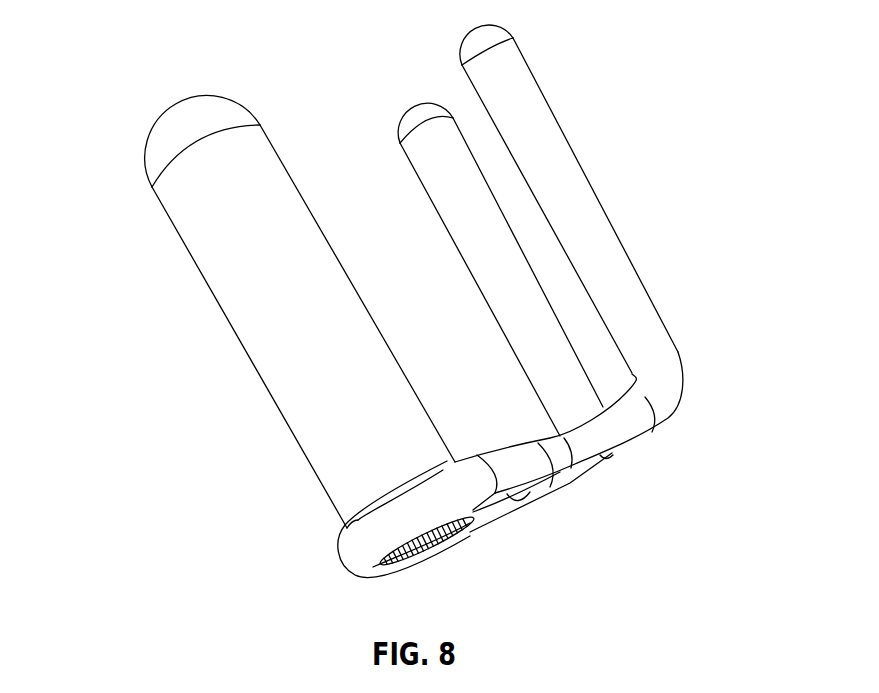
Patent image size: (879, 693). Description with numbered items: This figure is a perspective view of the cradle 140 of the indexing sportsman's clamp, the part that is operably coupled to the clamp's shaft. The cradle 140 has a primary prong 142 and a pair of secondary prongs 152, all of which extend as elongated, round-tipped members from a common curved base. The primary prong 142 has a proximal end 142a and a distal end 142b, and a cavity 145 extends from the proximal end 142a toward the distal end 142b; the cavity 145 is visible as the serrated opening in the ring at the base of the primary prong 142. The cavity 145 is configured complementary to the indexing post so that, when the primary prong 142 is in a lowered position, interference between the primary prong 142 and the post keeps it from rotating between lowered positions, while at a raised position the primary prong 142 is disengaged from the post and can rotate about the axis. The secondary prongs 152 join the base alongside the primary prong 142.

The cradle 140 is at (413, 321).
The primary prong 142 is at (248, 304).
The proximal end 142a is at (510, 485).
The distal end 142b is at (138, 108).
The cavity 145 is at (425, 550).
The secondary prongs 152 is at (433, 172).